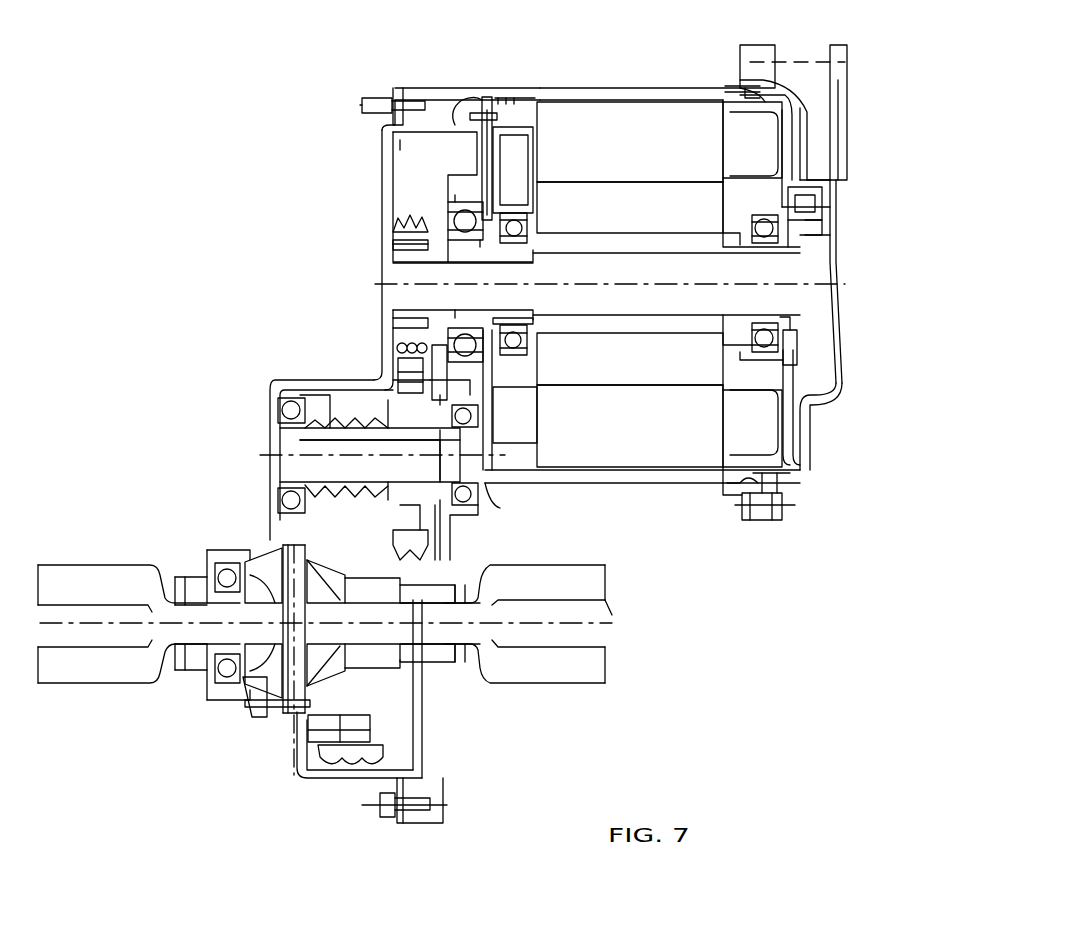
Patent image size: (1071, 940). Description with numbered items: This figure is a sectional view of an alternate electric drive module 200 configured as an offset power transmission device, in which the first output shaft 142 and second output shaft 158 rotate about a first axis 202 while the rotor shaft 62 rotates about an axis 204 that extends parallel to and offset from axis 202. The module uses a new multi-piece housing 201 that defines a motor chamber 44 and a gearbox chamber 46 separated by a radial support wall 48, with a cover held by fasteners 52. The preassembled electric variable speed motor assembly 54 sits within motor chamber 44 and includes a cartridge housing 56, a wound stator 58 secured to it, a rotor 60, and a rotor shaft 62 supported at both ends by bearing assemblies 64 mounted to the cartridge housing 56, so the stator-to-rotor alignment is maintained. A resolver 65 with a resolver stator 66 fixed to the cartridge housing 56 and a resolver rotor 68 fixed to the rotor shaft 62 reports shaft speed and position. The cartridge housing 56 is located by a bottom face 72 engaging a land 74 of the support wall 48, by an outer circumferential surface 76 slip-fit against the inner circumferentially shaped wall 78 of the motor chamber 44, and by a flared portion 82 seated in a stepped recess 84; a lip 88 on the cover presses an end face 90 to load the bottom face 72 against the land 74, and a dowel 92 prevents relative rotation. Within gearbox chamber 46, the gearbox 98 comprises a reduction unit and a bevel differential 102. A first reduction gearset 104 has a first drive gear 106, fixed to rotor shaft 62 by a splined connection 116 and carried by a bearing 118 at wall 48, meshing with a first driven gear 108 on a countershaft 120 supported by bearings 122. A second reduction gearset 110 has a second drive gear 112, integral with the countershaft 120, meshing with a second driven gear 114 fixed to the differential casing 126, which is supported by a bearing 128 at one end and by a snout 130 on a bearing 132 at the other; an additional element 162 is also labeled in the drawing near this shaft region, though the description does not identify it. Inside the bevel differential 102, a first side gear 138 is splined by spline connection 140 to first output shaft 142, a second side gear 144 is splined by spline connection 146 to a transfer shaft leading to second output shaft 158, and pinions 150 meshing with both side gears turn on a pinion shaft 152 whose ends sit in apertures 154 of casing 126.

The motor chamber 44 is at (690, 483).
The gearbox chamber 46 is at (427, 171).
The radial support wall 48 is at (480, 160).
The fasteners 52 is at (782, 512).
The electric variable speed motor assembly 54 is at (713, 92).
The cartridge housing 56 is at (678, 95).
The wound stator 58 is at (616, 148).
The rotor 60 is at (616, 219).
The rotor shaft 62 is at (618, 254).
The bearing assemblies 64 is at (520, 215).
The resolver 65 is at (825, 212).
The resolver stator 66 is at (810, 205).
The resolver rotor 68 is at (805, 238).
The bottom face 72 is at (462, 110).
The land 74 is at (520, 100).
The outer circumferential surface 76 is at (503, 98).
The inner circumferentially shaped wall 78 is at (500, 95).
The flared portion 82 is at (738, 80).
The stepped recess 84 is at (726, 495).
The lip 88 is at (775, 477).
The end face 90 is at (770, 510).
The dowel 92 is at (480, 80).
The gearbox 98 is at (370, 780).
The bevel differential 102 is at (262, 700).
The first reduction gearset 104 is at (405, 218).
The first drive gear 106 is at (418, 225).
The first driven gear 108 is at (400, 357).
The second reduction gearset 110 is at (318, 770).
The second drive gear 112 is at (300, 493).
The second driven gear 114 is at (320, 775).
The splined connection 116 is at (530, 245).
The bearing 118 is at (470, 218).
The countershaft 120 is at (300, 470).
The bearings 122 is at (478, 508).
The casing 126 is at (248, 703).
The bearing 128 is at (220, 652).
The snout 130 is at (430, 602).
The bearing 132 is at (462, 583).
The first side gear 138 is at (205, 688).
The spline connection 140 is at (255, 600).
The first output shaft 142 is at (85, 565).
The second side gear 144 is at (315, 600).
The spline connection 146 is at (315, 612).
The pinions 150 is at (295, 555).
The pinion shaft 152 is at (300, 700).
The apertures 154 is at (290, 698).
The second output shaft 158 is at (560, 575).
The shaft 162 is at (440, 527).
The alternate electric drive module 200 is at (605, 65).
The multi-piece housing 201 is at (442, 80).
The first axis 202 is at (612, 612).
The axis 204 is at (825, 282).